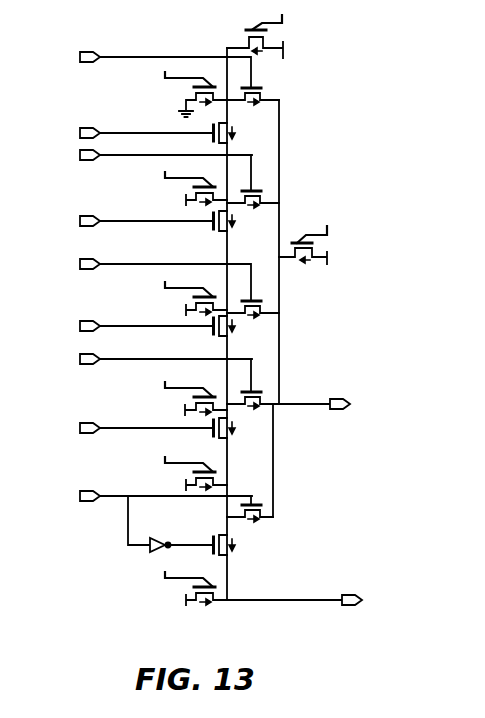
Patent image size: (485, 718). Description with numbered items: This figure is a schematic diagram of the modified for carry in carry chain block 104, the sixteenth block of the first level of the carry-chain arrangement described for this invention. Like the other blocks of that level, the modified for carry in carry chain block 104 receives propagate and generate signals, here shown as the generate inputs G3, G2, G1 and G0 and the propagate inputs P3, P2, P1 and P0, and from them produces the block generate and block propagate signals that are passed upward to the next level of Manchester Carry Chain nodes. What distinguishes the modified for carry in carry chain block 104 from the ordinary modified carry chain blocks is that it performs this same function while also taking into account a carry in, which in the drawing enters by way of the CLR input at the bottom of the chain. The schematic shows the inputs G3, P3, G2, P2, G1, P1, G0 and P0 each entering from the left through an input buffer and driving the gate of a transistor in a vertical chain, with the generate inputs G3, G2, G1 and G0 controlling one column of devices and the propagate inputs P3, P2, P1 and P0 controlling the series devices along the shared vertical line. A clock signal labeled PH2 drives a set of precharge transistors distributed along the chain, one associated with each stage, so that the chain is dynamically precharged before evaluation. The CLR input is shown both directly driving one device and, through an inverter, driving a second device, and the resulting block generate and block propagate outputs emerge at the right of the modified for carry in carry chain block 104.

The modified for carry in carry chain block 104 is at (213, 309).
The phase-2 clock precharge transistor PH2 is at (246, 304).
The generate input bit 3 G3 is at (150, 58).
The propagate input bit 3 P3 is at (142, 131).
The generate input bit 2 G2 is at (151, 156).
The propagate input bit 2 P2 is at (142, 221).
The generate input bit 1 G1 is at (150, 263).
The propagate input bit 1 P1 is at (142, 326).
The generate input bit 0 G0 is at (151, 358).
The propagate input bit 0 P0 is at (142, 429).
The clear input CLR(0) CLR is at (133, 520).